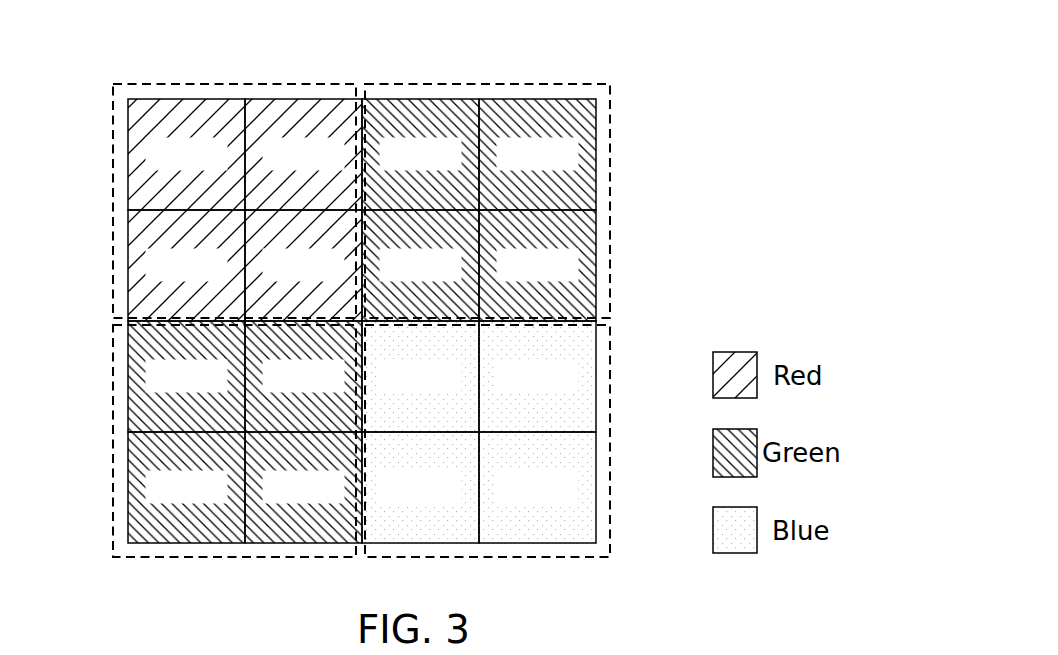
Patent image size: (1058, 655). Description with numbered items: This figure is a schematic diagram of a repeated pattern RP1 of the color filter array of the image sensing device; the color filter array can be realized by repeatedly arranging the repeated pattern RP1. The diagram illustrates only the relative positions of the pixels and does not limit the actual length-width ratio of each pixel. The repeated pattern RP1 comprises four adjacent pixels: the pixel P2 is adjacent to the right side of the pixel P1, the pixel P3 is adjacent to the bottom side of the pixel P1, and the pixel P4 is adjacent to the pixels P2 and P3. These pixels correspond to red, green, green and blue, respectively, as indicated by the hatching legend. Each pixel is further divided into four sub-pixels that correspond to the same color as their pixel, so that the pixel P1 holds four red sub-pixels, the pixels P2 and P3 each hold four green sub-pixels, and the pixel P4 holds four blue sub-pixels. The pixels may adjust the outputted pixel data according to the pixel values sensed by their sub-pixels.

The repeated pattern RP1 is at (432, 278).
The pixel P1 is at (199, 202).
The pixel P2 is at (525, 202).
The pixel P3 is at (198, 439).
The pixel P4 is at (526, 439).